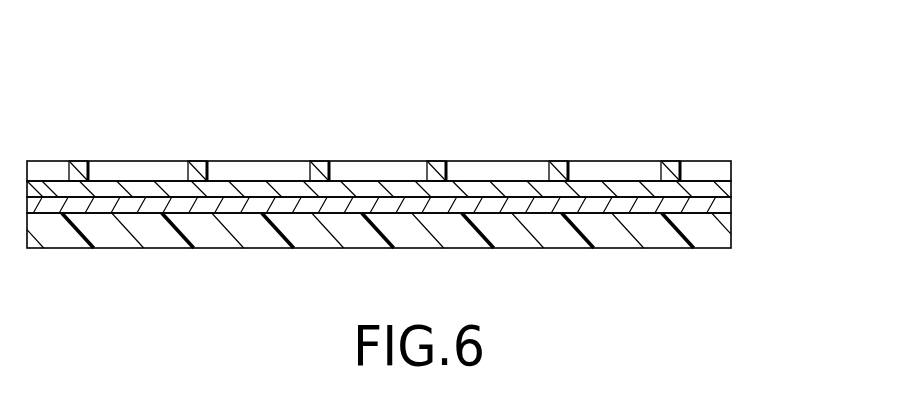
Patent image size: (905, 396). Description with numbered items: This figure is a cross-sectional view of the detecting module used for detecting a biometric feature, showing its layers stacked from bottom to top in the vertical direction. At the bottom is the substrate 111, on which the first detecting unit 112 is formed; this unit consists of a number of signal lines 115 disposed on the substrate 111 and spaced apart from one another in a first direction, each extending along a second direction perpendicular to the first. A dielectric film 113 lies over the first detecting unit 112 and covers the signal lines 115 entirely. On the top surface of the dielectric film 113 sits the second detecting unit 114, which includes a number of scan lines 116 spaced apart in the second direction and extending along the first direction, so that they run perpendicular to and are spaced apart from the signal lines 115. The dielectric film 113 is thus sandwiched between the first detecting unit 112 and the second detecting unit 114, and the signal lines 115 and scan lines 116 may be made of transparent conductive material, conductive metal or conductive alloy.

The substrate 111 is at (712, 235).
The first detecting unit 112 is at (449, 200).
The signal lines 115 is at (712, 205).
The dielectric film 113 is at (716, 190).
The second detecting unit 114 is at (379, 96).
The scan lines 116 is at (722, 82).